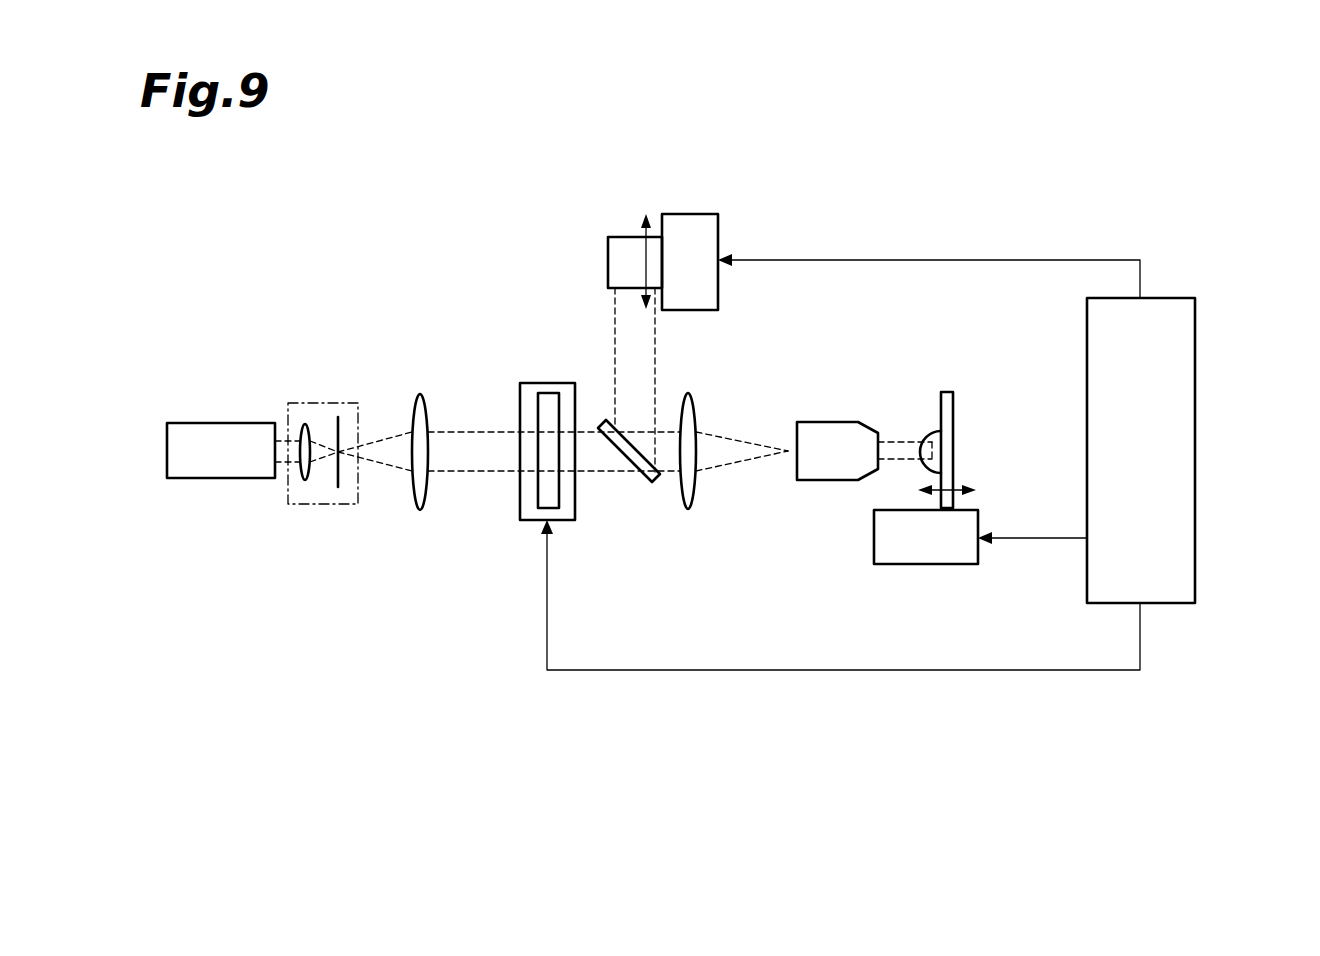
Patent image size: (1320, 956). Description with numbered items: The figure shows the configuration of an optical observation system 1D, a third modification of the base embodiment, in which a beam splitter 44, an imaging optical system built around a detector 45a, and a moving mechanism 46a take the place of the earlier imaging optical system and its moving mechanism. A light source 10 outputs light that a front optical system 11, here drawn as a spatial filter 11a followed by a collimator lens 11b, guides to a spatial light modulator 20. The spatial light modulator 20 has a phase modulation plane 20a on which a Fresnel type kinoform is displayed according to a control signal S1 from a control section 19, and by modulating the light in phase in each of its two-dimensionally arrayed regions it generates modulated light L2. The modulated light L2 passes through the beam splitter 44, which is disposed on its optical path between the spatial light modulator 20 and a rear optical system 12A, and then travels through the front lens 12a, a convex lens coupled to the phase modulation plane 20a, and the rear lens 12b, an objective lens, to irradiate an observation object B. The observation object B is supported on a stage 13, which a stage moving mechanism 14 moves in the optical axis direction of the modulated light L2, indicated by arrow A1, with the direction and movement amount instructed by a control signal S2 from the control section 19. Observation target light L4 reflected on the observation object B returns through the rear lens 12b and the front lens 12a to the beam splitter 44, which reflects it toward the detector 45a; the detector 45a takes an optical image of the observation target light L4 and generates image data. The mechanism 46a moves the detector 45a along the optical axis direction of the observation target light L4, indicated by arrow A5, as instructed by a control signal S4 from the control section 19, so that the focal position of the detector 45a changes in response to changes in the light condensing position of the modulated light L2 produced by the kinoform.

The optical observation system 1D is at (1056, 152).
The light source 10 is at (222, 479).
The front optical system 11 is at (358, 521).
The spatial filter 11a is at (325, 505).
The collimator lens 11b is at (420, 511).
The spatial light modulator 20 is at (576, 437).
The phase modulation plane 20a is at (556, 505).
The beam splitter 44 is at (622, 456).
The observation target light L4 is at (657, 355).
The detector 45a is at (607, 270).
The mechanism 46a is at (718, 230).
The arrow A5 is at (643, 232).
The rear optical system 12A is at (779, 502).
The front lens 12a is at (692, 490).
The rear lens 12b is at (826, 481).
The modulated light L2 is at (898, 441).
The observation object B is at (928, 432).
The stage 13 is at (953, 412).
The arrow A1 is at (957, 484).
The stage moving mechanism 14 is at (918, 565).
The control section 19 is at (1195, 456).
The control signal S4 is at (929, 264).
The control signal S2 is at (1032, 527).
The control signal S1 is at (840, 595).